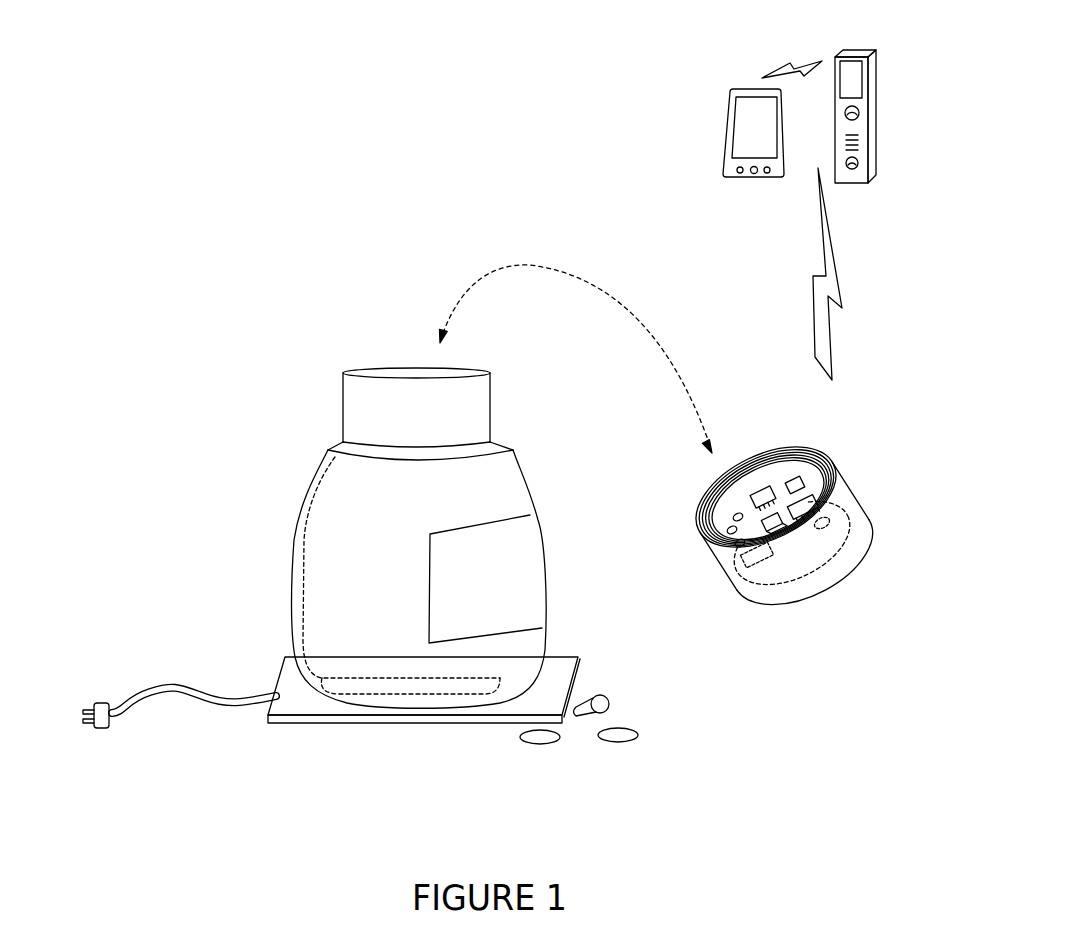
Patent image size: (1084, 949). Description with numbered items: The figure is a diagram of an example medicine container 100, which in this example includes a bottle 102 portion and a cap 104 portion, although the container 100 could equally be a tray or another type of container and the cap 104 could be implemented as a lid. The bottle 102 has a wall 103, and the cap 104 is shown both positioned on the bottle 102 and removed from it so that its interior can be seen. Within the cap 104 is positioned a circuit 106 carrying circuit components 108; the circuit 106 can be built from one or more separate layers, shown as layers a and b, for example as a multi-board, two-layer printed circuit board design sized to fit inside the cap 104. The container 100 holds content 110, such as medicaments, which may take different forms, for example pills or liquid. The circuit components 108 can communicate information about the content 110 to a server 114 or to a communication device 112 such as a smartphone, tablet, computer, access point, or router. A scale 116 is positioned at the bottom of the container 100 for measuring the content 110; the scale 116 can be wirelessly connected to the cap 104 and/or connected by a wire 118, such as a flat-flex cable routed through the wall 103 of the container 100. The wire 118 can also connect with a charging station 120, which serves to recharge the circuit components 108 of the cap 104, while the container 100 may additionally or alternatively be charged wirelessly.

The container 100 is at (273, 243).
The bottle 102 is at (352, 611).
The wall 103 is at (332, 563).
The cap 104 is at (483, 416).
The circuit 106 is at (818, 487).
The circuit components 108 is at (762, 492).
The layer a is at (822, 468).
The layer b is at (840, 508).
The content 110 is at (640, 686).
The communication device 112 is at (738, 88).
The server 114 is at (871, 70).
The scale 116 is at (500, 684).
The wire 118 is at (310, 512).
The charging station 120 is at (293, 705).